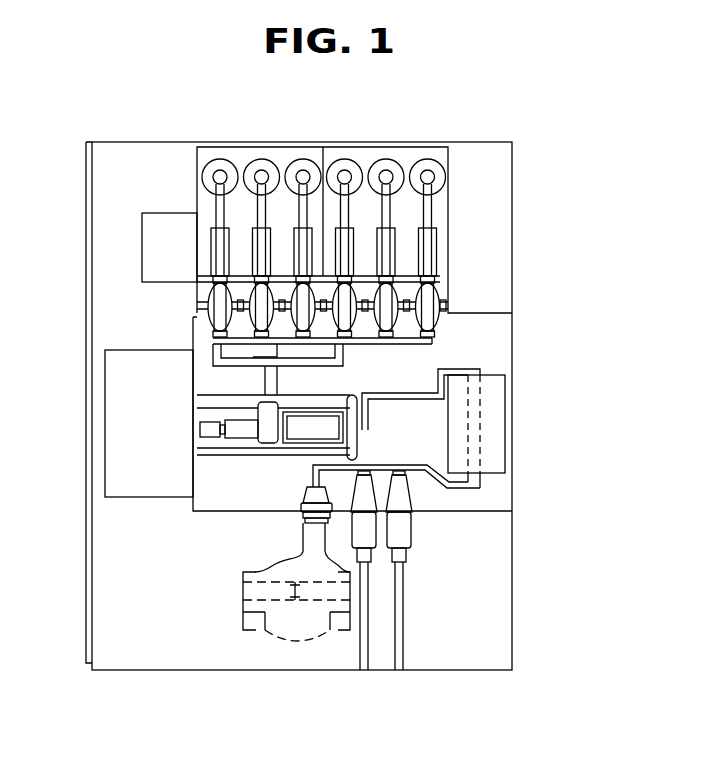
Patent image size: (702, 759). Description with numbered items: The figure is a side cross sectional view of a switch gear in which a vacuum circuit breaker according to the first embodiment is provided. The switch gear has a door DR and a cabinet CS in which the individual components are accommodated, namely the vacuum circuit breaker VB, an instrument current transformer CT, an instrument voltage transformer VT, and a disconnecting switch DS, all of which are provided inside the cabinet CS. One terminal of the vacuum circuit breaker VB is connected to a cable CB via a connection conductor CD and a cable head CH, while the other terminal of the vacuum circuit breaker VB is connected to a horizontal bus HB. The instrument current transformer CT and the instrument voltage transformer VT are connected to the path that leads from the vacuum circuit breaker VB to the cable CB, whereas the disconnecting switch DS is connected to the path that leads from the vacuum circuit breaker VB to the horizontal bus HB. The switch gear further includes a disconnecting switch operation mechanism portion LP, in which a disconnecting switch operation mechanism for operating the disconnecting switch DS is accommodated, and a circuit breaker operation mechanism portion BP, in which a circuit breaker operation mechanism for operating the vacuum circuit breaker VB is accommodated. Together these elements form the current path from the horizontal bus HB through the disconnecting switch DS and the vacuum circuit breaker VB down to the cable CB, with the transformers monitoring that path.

The cabinet CS is at (513, 189).
The door DR is at (86, 184).
The disconnecting switch operation mechanism portion LP is at (152, 242).
The circuit breaker operation mechanism portion BP is at (120, 408).
The horizontal bus HB is at (428, 175).
The disconnecting switch DS is at (210, 247).
The vacuum circuit breaker VB is at (257, 460).
The instrument current transformer CT is at (490, 432).
The connection conductor CD is at (462, 488).
The instrument voltage transformer VT is at (237, 618).
The cable head CH is at (412, 536).
The cable CB is at (403, 637).